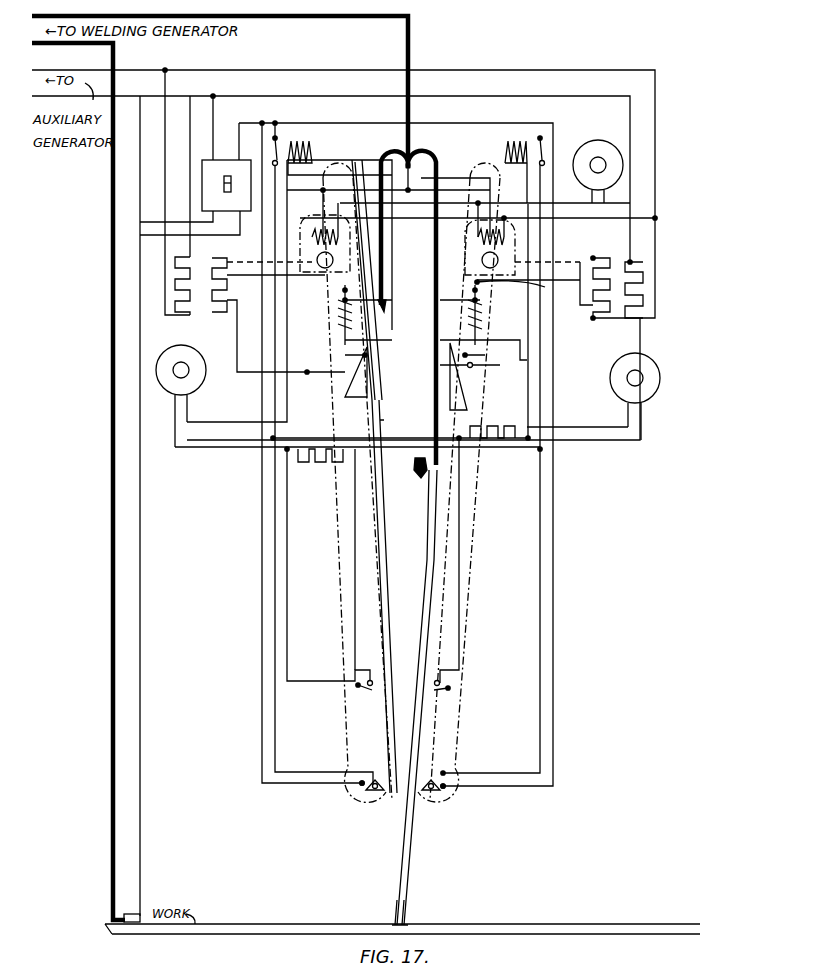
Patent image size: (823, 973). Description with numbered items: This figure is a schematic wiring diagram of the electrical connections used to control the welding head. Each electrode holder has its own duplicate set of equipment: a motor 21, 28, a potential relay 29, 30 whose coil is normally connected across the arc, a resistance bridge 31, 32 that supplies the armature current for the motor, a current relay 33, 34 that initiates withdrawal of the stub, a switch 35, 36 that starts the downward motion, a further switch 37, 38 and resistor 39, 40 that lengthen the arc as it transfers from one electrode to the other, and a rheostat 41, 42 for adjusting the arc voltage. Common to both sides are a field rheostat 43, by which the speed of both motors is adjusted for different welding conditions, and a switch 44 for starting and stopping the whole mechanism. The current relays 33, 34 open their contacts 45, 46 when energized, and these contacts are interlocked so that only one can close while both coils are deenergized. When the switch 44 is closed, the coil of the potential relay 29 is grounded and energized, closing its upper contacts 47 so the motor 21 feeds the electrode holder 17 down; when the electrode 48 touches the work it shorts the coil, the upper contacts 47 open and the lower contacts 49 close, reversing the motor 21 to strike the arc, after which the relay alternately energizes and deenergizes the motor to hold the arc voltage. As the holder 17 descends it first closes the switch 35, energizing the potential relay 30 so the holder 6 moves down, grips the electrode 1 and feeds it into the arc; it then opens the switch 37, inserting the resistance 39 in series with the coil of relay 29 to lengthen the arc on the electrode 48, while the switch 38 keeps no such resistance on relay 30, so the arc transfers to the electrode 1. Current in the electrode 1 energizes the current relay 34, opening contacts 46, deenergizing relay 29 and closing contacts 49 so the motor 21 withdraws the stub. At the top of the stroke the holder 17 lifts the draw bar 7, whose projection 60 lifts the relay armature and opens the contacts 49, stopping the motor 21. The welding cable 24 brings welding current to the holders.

The electrode 1 is at (386, 572).
The electrode holder 6 is at (382, 348).
The draw bar 7 is at (463, 408).
The electrode holder 17 is at (426, 517).
The motor 21 is at (512, 240).
The welding cable 24 is at (430, 238).
The motor 28 is at (302, 256).
The potential relay 29 is at (491, 315).
The potential relay 30 is at (325, 315).
The resistance bridge 31 is at (617, 296).
The resistance bridge 32 is at (201, 296).
The current relay 33 is at (510, 142).
The current relay 34 is at (302, 142).
The switch 35 is at (433, 800).
The switch 36 is at (372, 800).
The switch 37 is at (445, 688).
The switch 38 is at (378, 698).
The resistor 39 is at (478, 426).
The resistor 40 is at (326, 462).
The rheostat 41 is at (635, 396).
The rheostat 42 is at (181, 396).
The common field rheostat 43 is at (598, 171).
The switch 44 is at (226, 185).
The contacts 45 is at (546, 140).
The contacts 46 is at (268, 140).
The upper contacts 47 is at (522, 294).
The electrode 48 is at (408, 850).
The lower contacts 49 is at (478, 368).
The projection 60 is at (470, 348).